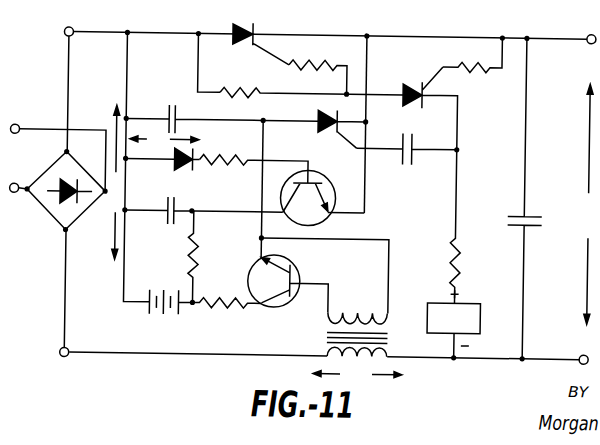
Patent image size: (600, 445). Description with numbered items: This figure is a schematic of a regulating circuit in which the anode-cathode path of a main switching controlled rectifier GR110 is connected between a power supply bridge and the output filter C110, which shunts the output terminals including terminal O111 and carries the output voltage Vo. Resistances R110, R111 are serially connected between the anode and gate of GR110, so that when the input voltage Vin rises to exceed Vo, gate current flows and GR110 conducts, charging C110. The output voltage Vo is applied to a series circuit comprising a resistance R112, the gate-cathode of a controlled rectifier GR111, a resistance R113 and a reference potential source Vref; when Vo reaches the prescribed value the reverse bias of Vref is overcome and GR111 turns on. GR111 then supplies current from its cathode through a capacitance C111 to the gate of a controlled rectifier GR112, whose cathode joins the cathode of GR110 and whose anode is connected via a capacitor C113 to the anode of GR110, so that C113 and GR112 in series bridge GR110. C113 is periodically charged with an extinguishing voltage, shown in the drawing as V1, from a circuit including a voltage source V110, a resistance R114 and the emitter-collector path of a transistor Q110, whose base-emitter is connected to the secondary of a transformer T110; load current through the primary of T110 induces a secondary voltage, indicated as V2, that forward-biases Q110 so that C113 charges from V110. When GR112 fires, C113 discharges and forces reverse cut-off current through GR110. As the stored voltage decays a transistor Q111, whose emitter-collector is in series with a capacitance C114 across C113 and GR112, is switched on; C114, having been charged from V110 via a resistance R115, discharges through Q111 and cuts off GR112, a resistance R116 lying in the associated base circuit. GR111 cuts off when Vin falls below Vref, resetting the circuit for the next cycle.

The controlled rectifier GR110 is at (268, 39).
The controlled rectifier GR111 is at (420, 108).
The controlled rectifier GR112 is at (314, 124).
The resistance R110 is at (311, 82).
The resistance R111 is at (318, 68).
The resistance R112 is at (473, 67).
The resistance R113 is at (472, 227).
The resistance R114 is at (227, 315).
The resistance R115 is at (209, 257).
The resistance R116 is at (253, 173).
The output filter C110 is at (537, 198).
The capacitance C111 is at (406, 160).
The capacitor C113 is at (195, 112).
The capacitance C114 is at (204, 206).
The transistor Q110 is at (288, 293).
The transistor Q111 is at (322, 205).
The transformer T110 is at (372, 335).
The voltage source V110 is at (169, 316).
The reference potential source Vref is at (454, 324).
The input voltage Vin is at (118, 182).
The voltage V1 is at (164, 139).
The voltage V2 is at (357, 374).
The output voltage Vo is at (588, 204).
The output terminal O111 is at (560, 345).